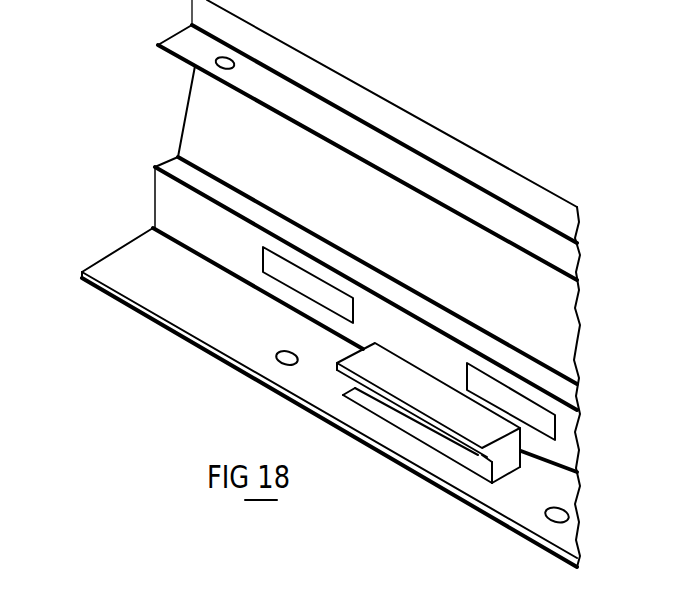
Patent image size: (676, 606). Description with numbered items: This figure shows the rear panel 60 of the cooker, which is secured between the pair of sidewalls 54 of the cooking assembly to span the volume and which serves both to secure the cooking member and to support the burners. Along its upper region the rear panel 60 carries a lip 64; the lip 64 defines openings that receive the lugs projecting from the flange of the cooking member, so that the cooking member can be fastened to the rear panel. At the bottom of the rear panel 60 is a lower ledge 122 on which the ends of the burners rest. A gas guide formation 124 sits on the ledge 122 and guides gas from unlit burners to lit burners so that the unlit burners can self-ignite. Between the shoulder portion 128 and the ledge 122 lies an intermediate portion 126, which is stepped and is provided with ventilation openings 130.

The sidewalls 54 is at (0, 7).
The rear panel 60 is at (580, 328).
The lip 64 is at (367, 147).
The lower ledge 122 is at (165, 297).
The gas guide formation 124 is at (450, 432).
The intermediate portion 126 is at (193, 119).
The shoulder portion 128 is at (155, 167).
The ventilation openings 130 is at (240, 250).